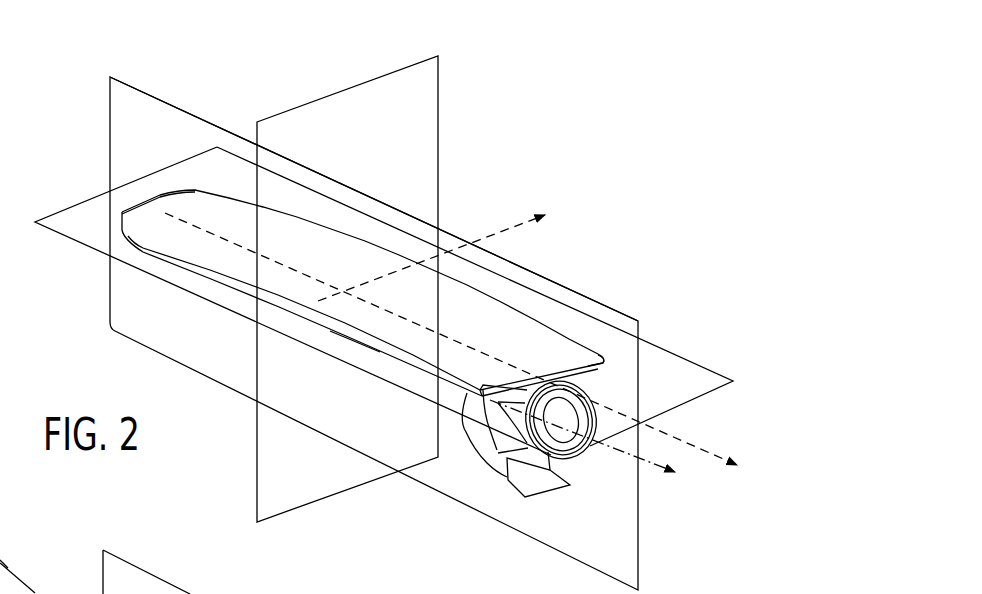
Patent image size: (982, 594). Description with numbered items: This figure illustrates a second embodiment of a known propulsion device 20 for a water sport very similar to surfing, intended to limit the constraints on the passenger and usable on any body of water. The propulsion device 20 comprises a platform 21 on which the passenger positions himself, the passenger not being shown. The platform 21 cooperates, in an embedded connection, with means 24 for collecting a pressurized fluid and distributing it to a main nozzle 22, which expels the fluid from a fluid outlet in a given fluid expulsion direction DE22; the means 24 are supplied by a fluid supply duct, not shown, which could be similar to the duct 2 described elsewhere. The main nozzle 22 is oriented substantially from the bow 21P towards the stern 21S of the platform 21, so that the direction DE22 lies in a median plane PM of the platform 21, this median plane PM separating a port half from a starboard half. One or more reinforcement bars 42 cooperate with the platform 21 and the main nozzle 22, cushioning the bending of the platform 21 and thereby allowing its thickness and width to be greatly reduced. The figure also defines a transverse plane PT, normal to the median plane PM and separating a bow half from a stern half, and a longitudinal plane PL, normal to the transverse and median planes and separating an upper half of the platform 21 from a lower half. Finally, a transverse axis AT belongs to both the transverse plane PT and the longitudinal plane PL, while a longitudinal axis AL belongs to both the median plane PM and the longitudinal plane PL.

The duct 2 is at (37, 593).
The propulsion device 20 is at (593, 262).
The platform 21 is at (395, 359).
The bow 21P is at (163, 202).
The stern 21S is at (558, 360).
The main nozzle 22 is at (520, 487).
The means for collecting and distributing a fluid 24 is at (508, 410).
The reinforcement bar 42 is at (362, 362).
The longitudinal axis AL is at (455, 355).
The transverse axis AT is at (434, 244).
The fluid expulsion direction DE22 is at (598, 458).
The longitudinal plane PL is at (384, 301).
The median plane PM is at (374, 333).
The transverse plane PT is at (347, 289).